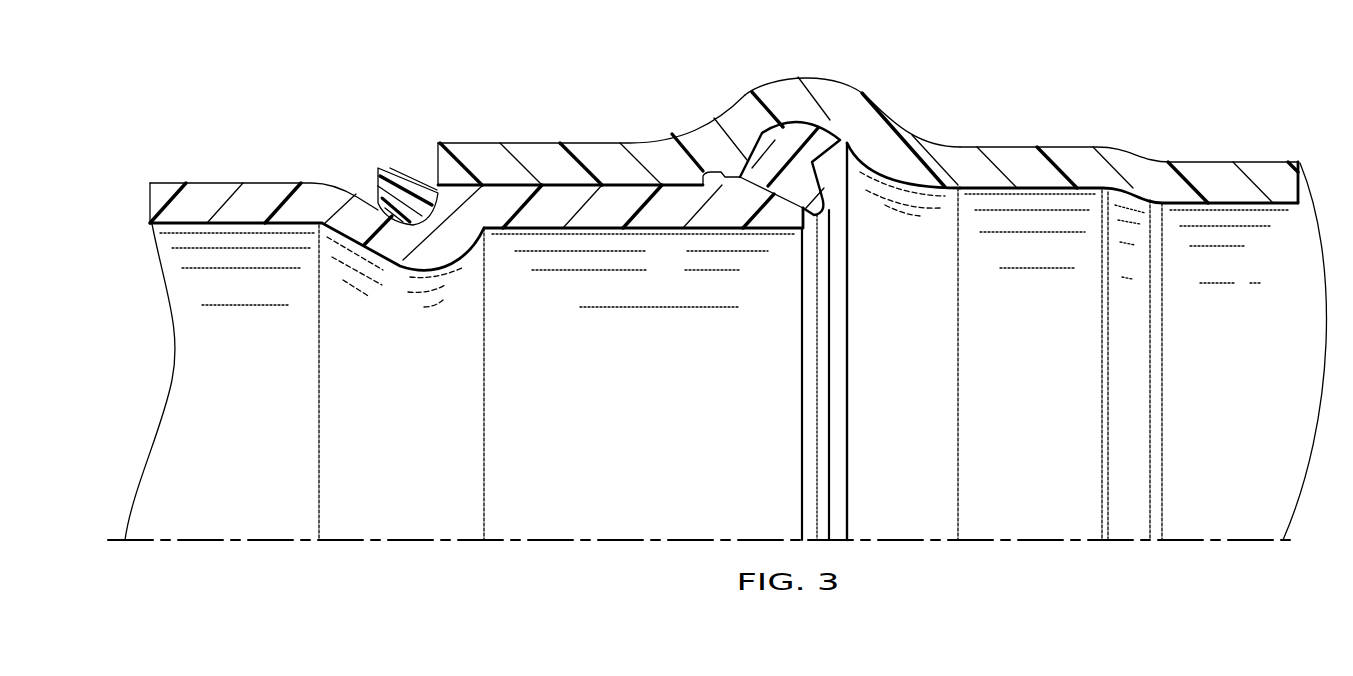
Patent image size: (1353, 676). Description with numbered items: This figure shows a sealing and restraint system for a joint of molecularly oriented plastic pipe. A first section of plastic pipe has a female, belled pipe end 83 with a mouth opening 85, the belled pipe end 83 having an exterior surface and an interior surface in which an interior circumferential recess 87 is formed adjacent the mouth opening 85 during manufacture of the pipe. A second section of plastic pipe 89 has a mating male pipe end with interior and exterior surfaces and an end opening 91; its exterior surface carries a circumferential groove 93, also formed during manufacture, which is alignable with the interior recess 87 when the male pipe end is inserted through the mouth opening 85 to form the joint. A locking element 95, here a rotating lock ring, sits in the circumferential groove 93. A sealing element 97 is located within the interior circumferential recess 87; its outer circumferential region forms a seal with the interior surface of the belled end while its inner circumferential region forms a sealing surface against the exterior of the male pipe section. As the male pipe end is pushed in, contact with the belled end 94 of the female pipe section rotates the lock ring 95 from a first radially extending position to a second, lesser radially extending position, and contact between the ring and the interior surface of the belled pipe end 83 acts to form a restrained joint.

The belled pipe end 83 is at (1072, 154).
The mouth opening 85 is at (447, 188).
The interior circumferential recess 87 is at (880, 172).
The second section of plastic pipe 89 is at (653, 224).
The end opening 91 is at (808, 268).
The circumferential groove 93 is at (395, 223).
The belled end 94 is at (535, 148).
The locking element 95 is at (383, 168).
The sealing element 97 is at (800, 120).